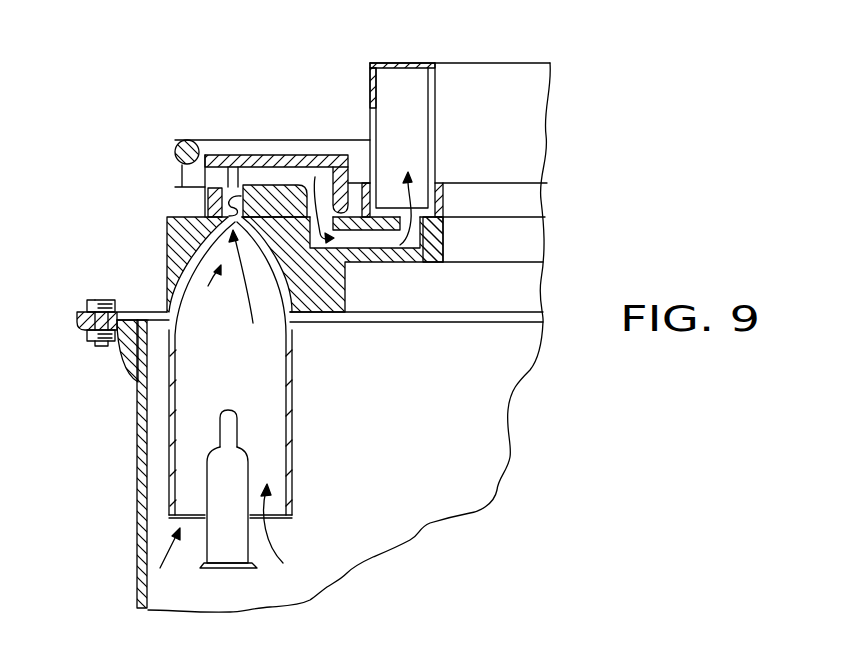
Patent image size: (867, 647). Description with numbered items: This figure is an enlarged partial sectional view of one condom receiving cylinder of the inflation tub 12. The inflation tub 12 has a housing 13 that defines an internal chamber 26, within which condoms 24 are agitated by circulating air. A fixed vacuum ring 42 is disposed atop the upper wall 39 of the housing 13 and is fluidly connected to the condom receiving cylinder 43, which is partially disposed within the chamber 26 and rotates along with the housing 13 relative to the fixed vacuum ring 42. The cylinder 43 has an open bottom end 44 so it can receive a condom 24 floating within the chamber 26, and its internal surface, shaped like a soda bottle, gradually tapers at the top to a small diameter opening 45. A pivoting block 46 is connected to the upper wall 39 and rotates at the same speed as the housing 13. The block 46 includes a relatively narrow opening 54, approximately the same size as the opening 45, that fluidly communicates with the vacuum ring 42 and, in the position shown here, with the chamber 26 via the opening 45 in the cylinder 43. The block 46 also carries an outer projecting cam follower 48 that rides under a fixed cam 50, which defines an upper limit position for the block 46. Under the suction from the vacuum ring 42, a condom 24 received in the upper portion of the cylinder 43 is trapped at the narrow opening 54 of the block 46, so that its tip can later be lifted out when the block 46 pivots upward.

The inflation tub 12 is at (112, 420).
The housing 13 is at (137, 450).
The condom 24 is at (235, 471).
The internal chamber 26 is at (470, 473).
The upper wall 39 is at (343, 313).
The vacuum ring 42 is at (402, 82).
The condom receiving cylinder 43 is at (292, 390).
The open bottom end 44 is at (290, 522).
The small diameter opening 45 is at (246, 190).
The pivoting block 46 is at (303, 160).
The cam follower 48 is at (181, 183).
The fixed cam 50 is at (188, 140).
The narrow opening 54 is at (220, 224).